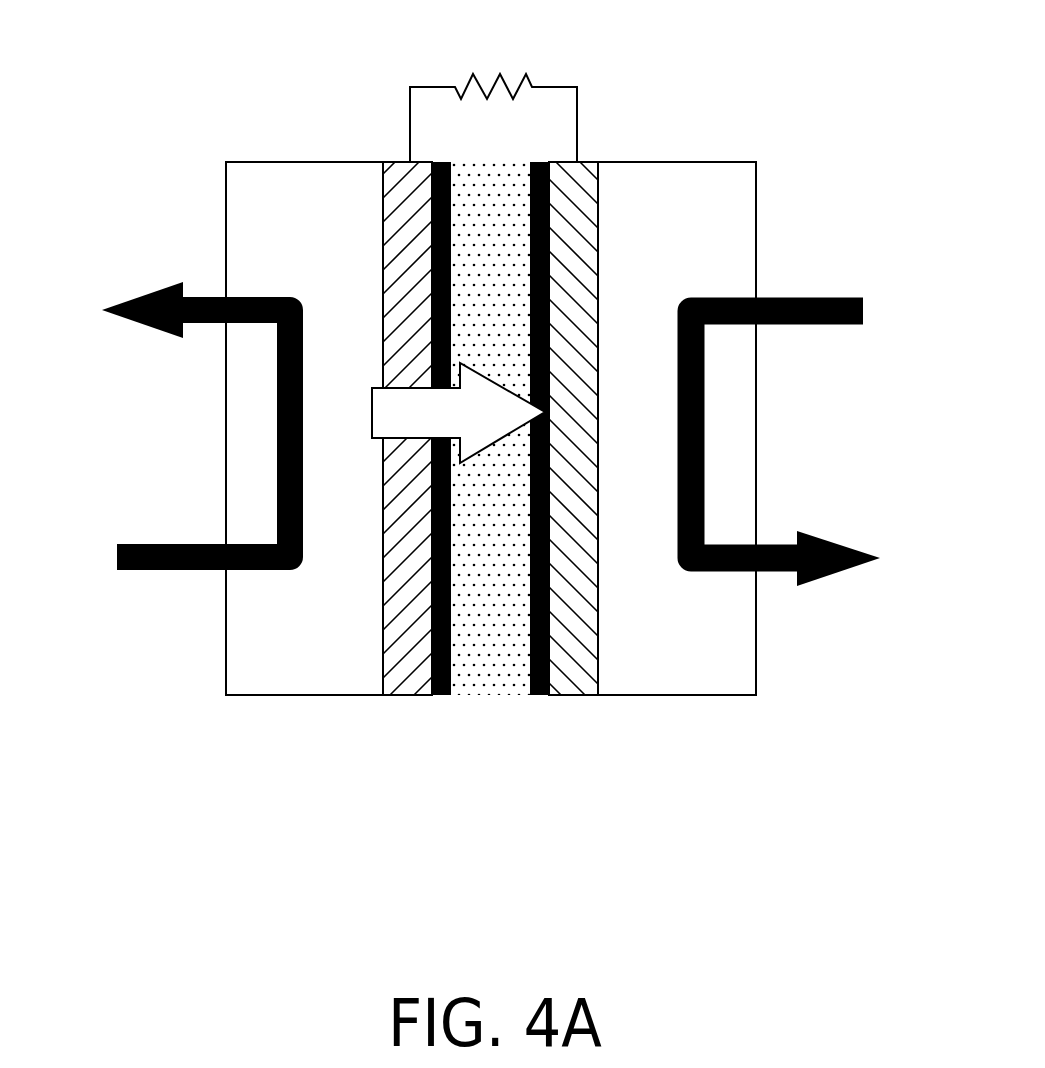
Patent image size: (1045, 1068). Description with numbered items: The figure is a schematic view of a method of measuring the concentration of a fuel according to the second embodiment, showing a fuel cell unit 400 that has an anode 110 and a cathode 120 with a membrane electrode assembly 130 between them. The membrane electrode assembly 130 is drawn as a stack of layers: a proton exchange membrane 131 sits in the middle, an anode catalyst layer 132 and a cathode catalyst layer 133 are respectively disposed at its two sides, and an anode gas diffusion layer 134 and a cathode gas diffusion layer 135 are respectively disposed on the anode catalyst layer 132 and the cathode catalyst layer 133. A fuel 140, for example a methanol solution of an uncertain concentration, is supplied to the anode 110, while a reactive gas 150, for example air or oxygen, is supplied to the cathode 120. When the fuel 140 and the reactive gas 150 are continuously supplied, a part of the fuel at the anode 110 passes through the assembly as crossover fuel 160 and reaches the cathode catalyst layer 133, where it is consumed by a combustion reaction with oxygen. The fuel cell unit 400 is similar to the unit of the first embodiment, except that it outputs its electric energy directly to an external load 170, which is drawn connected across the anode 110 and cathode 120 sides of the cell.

The anode 110 is at (302, 177).
The cathode 120 is at (680, 180).
The membrane electrode assembly 130 is at (490, 542).
The proton exchange membrane 131 is at (485, 670).
The anode catalyst layer 132 is at (440, 697).
The cathode catalyst layer 133 is at (535, 697).
The anode gas diffusion layer 134 is at (405, 665).
The cathode gas diffusion layer 135 is at (607, 507).
The fuel 140 is at (166, 432).
The reactive gas 150 is at (812, 437).
The crossover fuel 160 is at (458, 413).
The external load 170 is at (499, 72).
The fuel cell unit 400 is at (812, 803).